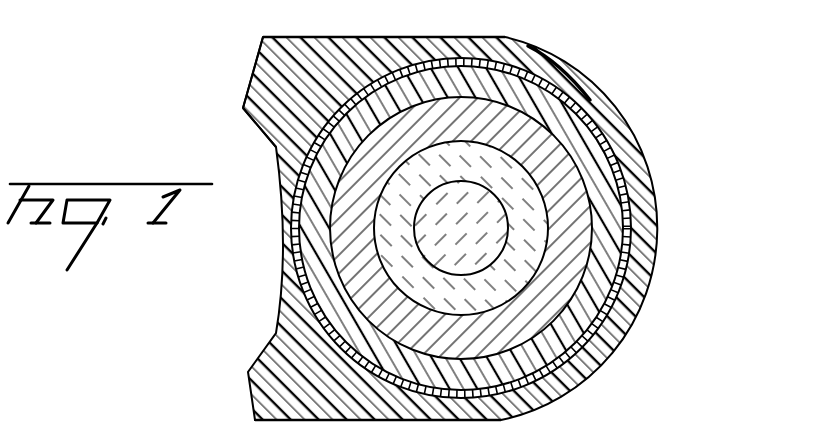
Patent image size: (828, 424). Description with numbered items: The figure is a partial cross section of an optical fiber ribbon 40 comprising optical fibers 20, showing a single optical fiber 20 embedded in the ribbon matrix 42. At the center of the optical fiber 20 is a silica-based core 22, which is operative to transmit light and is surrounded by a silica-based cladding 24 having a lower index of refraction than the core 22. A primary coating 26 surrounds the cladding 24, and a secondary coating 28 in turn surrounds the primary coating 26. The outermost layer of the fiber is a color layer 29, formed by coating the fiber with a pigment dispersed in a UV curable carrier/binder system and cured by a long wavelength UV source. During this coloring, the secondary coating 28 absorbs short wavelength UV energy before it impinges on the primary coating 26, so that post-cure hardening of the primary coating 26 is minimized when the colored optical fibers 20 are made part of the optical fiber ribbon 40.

The optical fiber 20 is at (578, 100).
The silica-based core 22 is at (455, 245).
The silica-based cladding 24 is at (537, 252).
The primary coating 26 is at (583, 208).
The secondary coating 28 is at (592, 152).
The color layer 29 is at (517, 68).
The optical fiber ribbon 40 is at (268, 60).
The ribbon matrix 42 is at (258, 122).